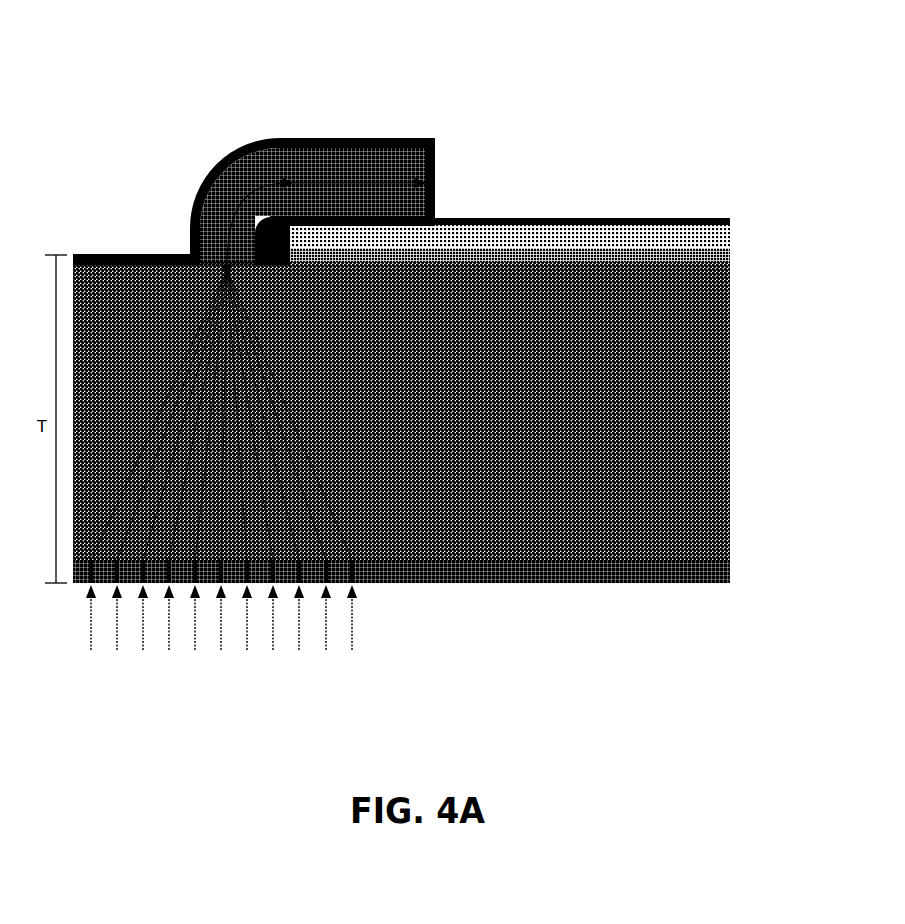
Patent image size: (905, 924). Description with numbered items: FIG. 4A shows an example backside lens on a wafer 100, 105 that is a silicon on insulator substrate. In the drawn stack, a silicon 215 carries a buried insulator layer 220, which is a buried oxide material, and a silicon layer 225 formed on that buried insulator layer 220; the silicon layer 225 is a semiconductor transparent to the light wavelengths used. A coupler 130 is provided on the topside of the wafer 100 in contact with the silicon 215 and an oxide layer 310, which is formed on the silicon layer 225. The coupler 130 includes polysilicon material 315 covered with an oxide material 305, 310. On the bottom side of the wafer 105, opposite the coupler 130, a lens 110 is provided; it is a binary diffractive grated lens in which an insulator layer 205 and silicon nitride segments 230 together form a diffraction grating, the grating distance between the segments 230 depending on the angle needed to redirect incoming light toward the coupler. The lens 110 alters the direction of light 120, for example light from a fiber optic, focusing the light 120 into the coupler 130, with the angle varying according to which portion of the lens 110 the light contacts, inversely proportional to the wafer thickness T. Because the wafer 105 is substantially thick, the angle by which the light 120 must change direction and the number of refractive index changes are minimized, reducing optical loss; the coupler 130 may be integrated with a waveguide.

The wafer 100 is at (133, 25).
The wafer 105 is at (681, 538).
The lens 110 is at (735, 560).
The light 120 is at (356, 626).
The coupler 130 is at (236, 147).
The insulator layer 205 is at (562, 584).
The silicon 215 is at (708, 410).
The buried insulator layer 220 is at (720, 256).
The silicon layer 225 is at (722, 234).
The segments 230 is at (362, 560).
The oxide material 305 is at (434, 138).
The oxide layer 310 is at (608, 218).
The polysilicon material 315 is at (330, 138).